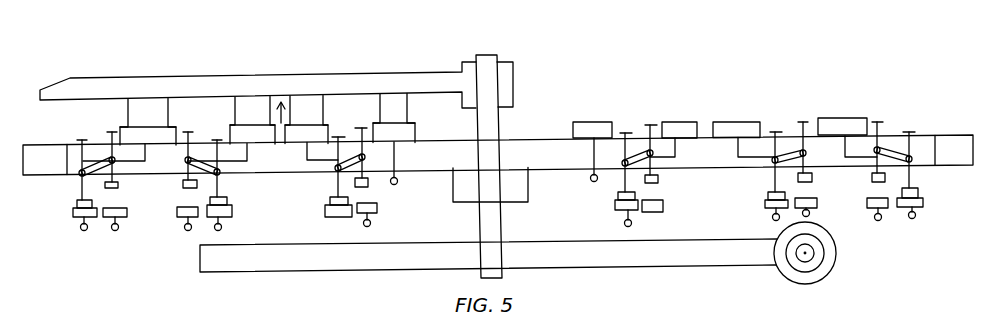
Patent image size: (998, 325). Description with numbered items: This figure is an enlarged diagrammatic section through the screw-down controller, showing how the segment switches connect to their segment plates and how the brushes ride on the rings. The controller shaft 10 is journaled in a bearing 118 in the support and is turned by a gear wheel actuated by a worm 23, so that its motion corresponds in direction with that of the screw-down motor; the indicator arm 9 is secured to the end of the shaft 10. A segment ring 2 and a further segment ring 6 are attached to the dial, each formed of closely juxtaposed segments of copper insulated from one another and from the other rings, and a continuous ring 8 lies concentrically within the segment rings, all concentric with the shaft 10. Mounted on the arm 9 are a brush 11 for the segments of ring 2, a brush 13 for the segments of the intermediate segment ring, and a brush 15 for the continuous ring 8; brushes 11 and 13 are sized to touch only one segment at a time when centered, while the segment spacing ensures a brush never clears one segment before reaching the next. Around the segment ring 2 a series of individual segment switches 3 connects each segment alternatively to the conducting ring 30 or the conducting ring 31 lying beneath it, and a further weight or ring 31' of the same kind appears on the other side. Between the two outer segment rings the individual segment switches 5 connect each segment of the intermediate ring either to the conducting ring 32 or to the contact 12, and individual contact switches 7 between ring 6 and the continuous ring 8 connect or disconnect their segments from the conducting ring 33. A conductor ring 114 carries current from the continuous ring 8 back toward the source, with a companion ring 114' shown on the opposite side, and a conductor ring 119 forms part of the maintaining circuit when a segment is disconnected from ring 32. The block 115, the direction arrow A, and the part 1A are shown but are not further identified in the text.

The indicator arm 9 is at (353, 65).
The brush 11 is at (145, 68).
The brush 13 is at (250, 68).
The suspension block 1A is at (303, 67).
The brush 15 is at (395, 68).
The shaft 10 is at (488, 50).
The direction / block A is at (733, 115).
The individual segment switch 3 is at (95, 148).
The segment ring 2 is at (173, 132).
The individual segment switch 5 is at (200, 152).
The segment ring 6 is at (327, 127).
The individual contact switch 7 is at (337, 170).
The continuous ring 8 is at (413, 127).
The block 115 is at (808, 122).
The conductor ring 114 is at (417, 168).
The rod 114' is at (579, 176).
The bearing 118 is at (535, 190).
The conducting ring 30 is at (73, 231).
The conducting ring 31 is at (130, 222).
The weight 31' is at (870, 220).
The conducting ring 32 is at (178, 232).
The conductor ring 119 is at (235, 213).
The contact 12 is at (764, 202).
The conducting ring 33 is at (378, 222).
The worm 23 is at (845, 255).